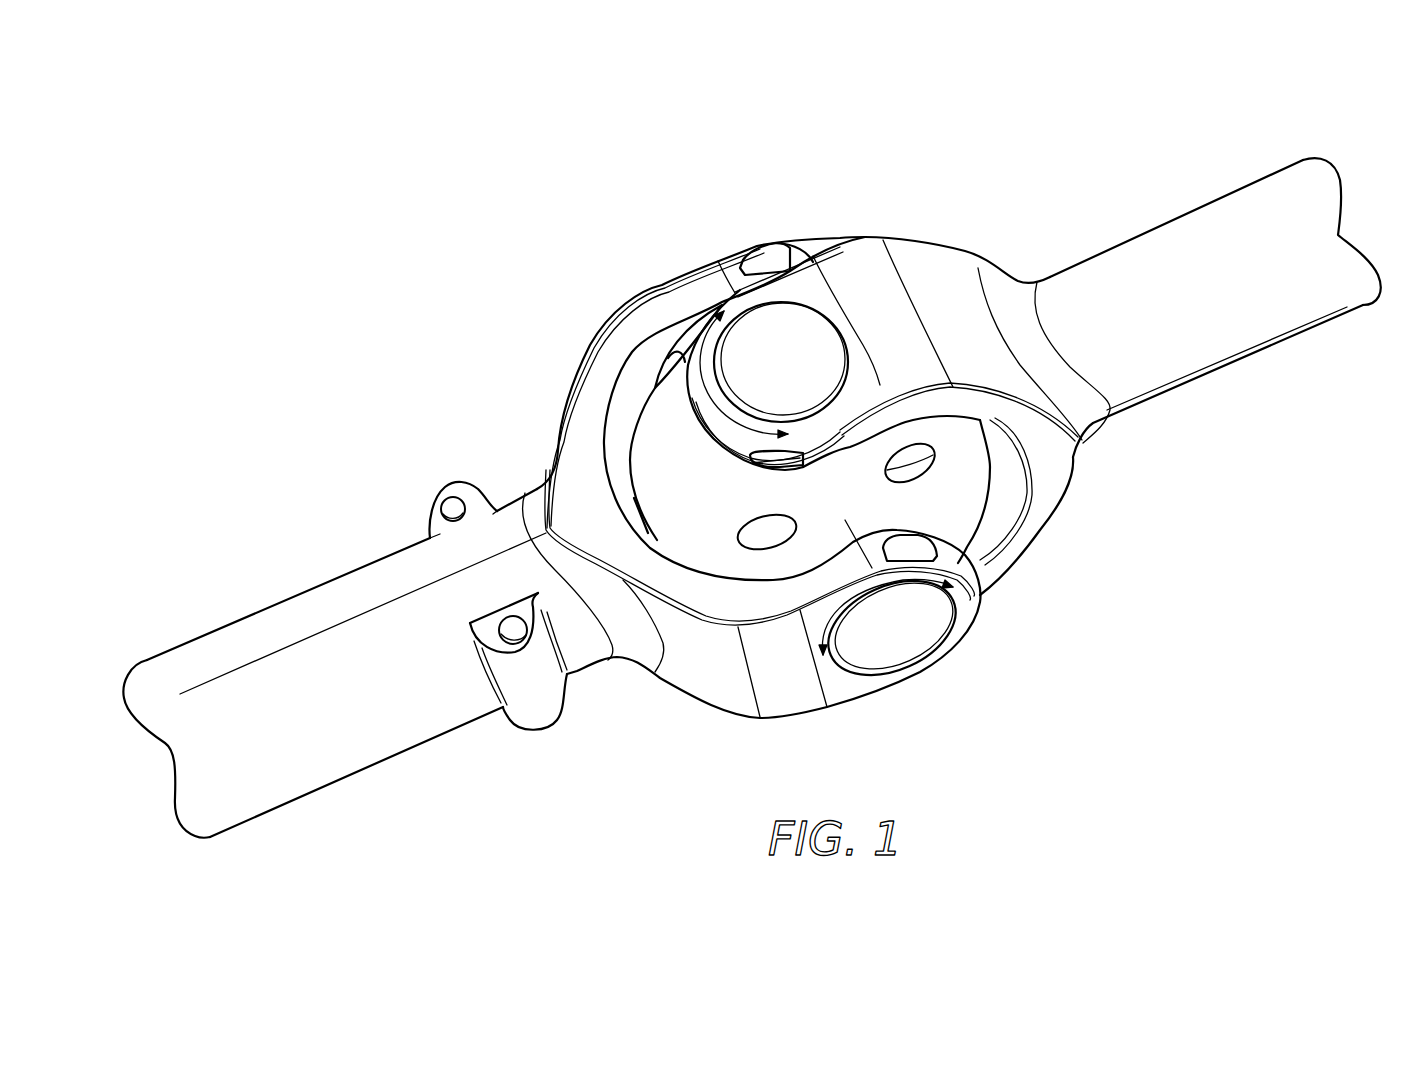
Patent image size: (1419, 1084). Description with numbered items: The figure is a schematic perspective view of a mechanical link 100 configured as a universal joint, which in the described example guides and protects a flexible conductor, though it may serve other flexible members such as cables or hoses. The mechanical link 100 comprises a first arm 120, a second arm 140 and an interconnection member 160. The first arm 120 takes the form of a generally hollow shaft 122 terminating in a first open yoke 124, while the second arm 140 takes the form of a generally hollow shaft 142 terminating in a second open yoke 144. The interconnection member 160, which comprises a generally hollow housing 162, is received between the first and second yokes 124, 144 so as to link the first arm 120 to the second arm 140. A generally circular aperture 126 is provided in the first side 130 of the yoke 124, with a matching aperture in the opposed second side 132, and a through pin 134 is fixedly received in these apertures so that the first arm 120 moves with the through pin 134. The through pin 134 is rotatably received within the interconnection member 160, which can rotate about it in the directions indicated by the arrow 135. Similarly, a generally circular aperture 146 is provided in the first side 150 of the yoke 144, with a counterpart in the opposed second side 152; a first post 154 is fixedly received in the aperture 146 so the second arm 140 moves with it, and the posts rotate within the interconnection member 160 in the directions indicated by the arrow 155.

The mechanical link 100 is at (465, 215).
The first arm 120 is at (1190, 410).
The generally hollow shaft 122 is at (1277, 323).
The first open yoke 124 is at (1058, 472).
The generally circular aperture 126 is at (785, 301).
The first side 130 is at (867, 250).
The second side 132 is at (1037, 523).
The through pin 134 is at (800, 375).
The arrow 135 is at (787, 440).
The second arm 140 is at (327, 568).
The generally hollow shaft 142 is at (258, 620).
The second open yoke 144 is at (613, 320).
The generally circular aperture 146 is at (953, 620).
The first side 150 is at (793, 707).
The second side 152 is at (657, 297).
The first post 154 is at (913, 640).
The arrow 155 is at (823, 655).
The interconnection member 160 is at (983, 540).
The generally hollow housing 162 is at (652, 427).